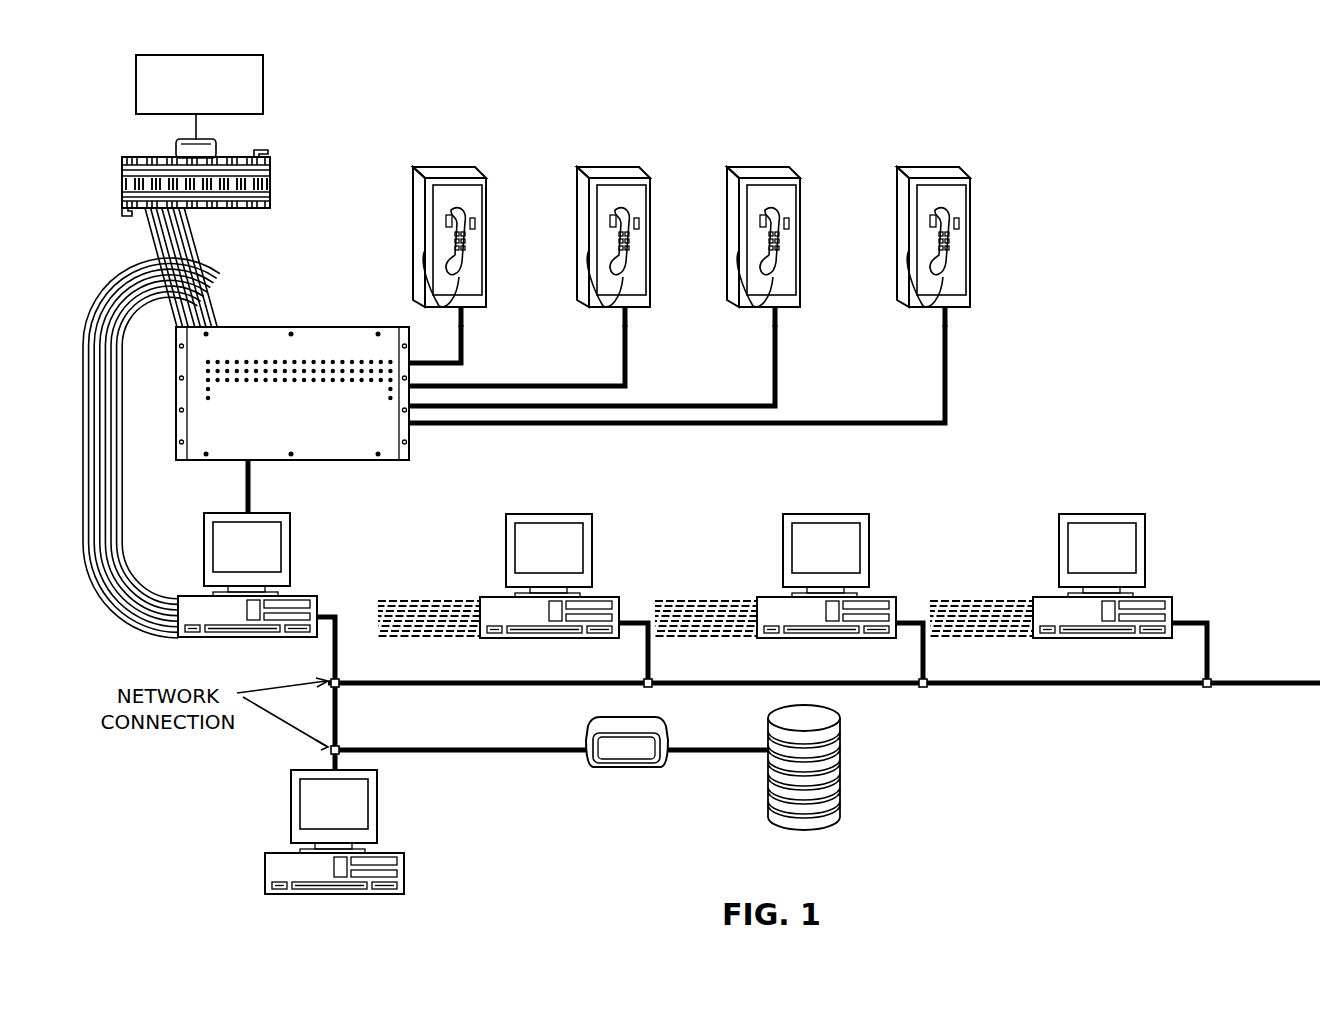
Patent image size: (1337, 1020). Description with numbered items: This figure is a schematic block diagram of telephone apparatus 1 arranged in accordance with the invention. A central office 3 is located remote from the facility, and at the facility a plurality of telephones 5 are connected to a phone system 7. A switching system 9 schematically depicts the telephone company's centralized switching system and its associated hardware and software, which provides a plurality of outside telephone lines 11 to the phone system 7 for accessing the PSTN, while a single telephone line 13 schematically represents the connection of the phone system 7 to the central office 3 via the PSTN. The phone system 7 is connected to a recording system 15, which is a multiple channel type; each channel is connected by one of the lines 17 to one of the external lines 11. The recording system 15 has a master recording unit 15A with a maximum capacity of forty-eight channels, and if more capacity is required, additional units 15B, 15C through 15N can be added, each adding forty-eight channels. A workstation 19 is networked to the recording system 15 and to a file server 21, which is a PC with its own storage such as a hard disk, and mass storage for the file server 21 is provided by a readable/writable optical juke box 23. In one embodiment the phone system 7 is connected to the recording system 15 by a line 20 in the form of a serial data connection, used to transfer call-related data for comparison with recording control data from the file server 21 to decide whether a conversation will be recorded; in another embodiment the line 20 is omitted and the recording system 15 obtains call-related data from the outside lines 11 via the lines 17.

The telephone apparatus 1 is at (768, 95).
The central office 3 is at (263, 79).
The telephones 5 is at (488, 200).
The phone system 7 is at (336, 327).
The switching system 9 is at (270, 181).
The outside telephone lines 11 is at (217, 284).
The telephone line 13 is at (197, 122).
The recording system 15 is at (632, 506).
The master recording unit 15A is at (190, 596).
The recording unit 15B is at (608, 597).
The recording unit 15C is at (885, 597).
The recording unit 15N is at (1161, 597).
The lines 17 is at (136, 486).
The workstation 19 is at (392, 853).
The line 20 is at (251, 486).
The file server 21 is at (656, 767).
The optical juke box 23 is at (841, 807).